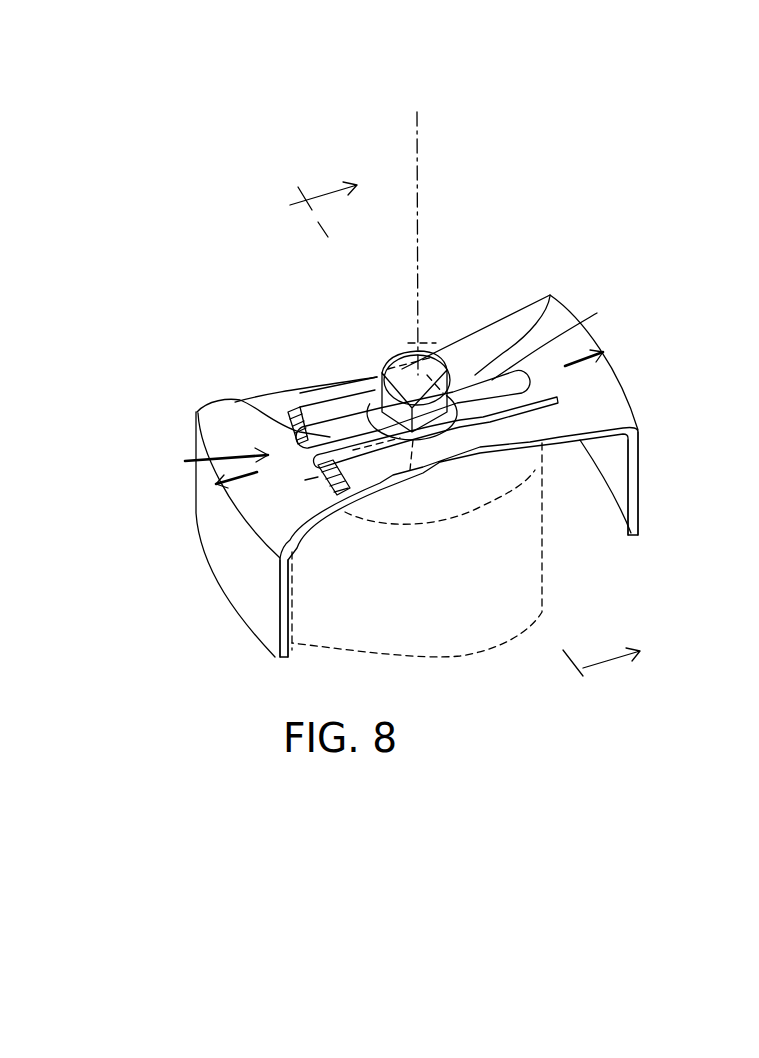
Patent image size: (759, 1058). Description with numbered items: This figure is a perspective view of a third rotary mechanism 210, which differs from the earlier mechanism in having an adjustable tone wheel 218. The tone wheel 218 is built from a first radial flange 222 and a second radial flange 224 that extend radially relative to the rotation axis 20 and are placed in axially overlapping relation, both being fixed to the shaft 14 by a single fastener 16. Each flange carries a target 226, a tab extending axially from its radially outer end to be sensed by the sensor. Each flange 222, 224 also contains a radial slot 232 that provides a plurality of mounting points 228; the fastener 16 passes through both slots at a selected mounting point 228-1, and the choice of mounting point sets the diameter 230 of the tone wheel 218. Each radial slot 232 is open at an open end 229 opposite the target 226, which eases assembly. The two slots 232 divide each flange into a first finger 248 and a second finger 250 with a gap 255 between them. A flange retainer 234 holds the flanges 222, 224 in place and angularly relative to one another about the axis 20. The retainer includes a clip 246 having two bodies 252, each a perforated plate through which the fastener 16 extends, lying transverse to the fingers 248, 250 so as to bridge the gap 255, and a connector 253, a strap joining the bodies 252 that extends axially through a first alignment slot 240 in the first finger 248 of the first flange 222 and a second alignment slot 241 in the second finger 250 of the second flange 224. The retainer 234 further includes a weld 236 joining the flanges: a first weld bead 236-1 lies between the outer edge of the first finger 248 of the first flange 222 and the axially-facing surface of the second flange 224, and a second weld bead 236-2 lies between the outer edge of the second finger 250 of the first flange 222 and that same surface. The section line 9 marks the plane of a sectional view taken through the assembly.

The third rotary mechanism 210 is at (547, 158).
The rotation axis 20 is at (417, 140).
The adjustable tone wheel 218 is at (247, 230).
The second radial flange 224 is at (220, 427).
The first radial flange 222 is at (572, 340).
The fastener 16 is at (452, 355).
The clip 246 is at (397, 352).
The body 252 is at (418, 362).
The gap 255 is at (372, 362).
The flange retainer 234 is at (353, 430).
The first finger 248 is at (322, 398).
The radial slot 232 is at (353, 382).
The mounting points 228 is at (345, 425).
The selected mounting point 228-1 is at (420, 460).
The second finger 250 is at (468, 365).
The second weld bead 236-2 is at (285, 408).
The first weld bead 236-1 is at (343, 492).
The weld 236 is at (178, 463).
The diameter 230 is at (232, 470).
The first alignment slot 240 is at (565, 406).
The second alignment slot 241 is at (335, 492).
The open end 229 is at (332, 487).
The target 226 is at (262, 616).
The connector 253 is at (480, 450).
The shaft 14 is at (547, 612).
The section line 9- 9 is at (461, 431).